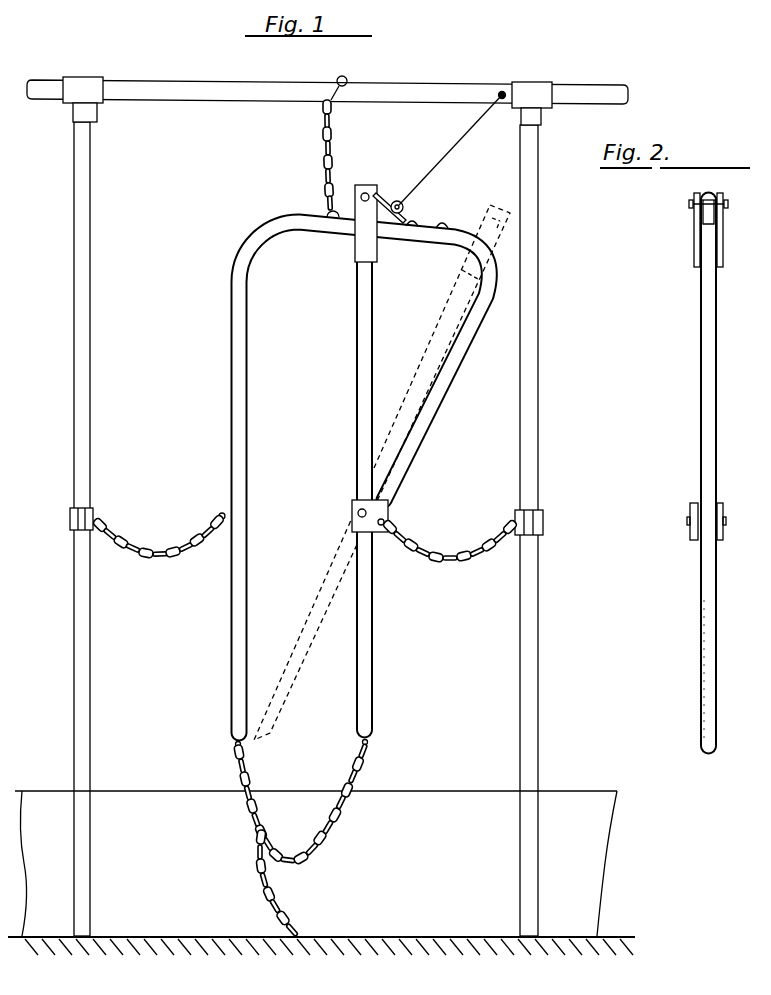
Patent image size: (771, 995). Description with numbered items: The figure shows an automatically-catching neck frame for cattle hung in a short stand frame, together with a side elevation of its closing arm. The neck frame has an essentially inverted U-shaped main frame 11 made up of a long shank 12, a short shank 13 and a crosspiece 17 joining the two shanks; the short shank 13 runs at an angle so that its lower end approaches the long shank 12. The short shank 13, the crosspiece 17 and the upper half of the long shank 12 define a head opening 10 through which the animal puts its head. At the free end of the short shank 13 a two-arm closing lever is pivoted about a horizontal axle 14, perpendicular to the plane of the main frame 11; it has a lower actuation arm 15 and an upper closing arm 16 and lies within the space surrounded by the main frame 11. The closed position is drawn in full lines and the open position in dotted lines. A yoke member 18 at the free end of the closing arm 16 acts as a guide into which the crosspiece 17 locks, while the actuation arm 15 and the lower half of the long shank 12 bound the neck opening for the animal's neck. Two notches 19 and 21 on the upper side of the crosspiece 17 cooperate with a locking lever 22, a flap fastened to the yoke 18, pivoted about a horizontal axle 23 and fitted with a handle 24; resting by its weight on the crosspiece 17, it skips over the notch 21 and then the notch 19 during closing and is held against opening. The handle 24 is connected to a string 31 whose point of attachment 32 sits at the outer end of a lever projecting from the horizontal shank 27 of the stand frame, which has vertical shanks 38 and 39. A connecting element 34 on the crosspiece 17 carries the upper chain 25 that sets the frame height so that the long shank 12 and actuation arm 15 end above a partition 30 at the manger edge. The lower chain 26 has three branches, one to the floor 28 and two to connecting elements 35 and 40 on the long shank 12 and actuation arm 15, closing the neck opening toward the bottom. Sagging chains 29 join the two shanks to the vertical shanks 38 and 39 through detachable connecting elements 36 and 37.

In FIG. 1, the head opening 10 is at (378, 444).
In FIG. 1, the main frame 11 is at (228, 322).
In FIG. 1, the long shank 12 is at (232, 358).
In FIG. 1, the short shank 13 is at (440, 396).
In FIG. 1, the horizontal axle 14 is at (356, 514).
In FIG. 2, the horizontal axle 14 is at (690, 522).
In FIG. 1, the actuation arm 15 is at (362, 651).
In FIG. 2, the actuation arm 15 is at (700, 660).
In FIG. 1, the closing arm 16 is at (418, 367).
In FIG. 2, the closing arm 16 is at (700, 367).
In FIG. 1, the crosspiece 17 is at (395, 238).
In FIG. 1, the yoke member 18 is at (358, 240).
In FIG. 2, the yoke member 18 is at (696, 240).
In FIG. 1, the notch 19 is at (415, 221).
In FIG. 1, the notch 21 is at (443, 231).
In FIG. 1, the locking lever 22 is at (398, 201).
In FIG. 2, the locking lever 22 is at (709, 219).
In FIG. 1, the horizontal axle 23 is at (366, 192).
In FIG. 2, the horizontal axle 23 is at (693, 204).
In FIG. 1, the handle 24 is at (405, 210).
In FIG. 1, the upper chain 25 is at (337, 135).
In FIG. 1, the lower chain 26 is at (252, 822).
In FIG. 1, the horizontal shank 27 is at (207, 95).
In FIG. 1, the floor 28 is at (190, 935).
In FIG. 1, the chains 29 is at (131, 530).
In FIG. 1, the partition 30 is at (446, 892).
In FIG. 1, the string 31 is at (466, 134).
In FIG. 1, the point of attachment 32 is at (501, 92).
In FIG. 1, the connecting element 34 is at (326, 211).
In FIG. 1, the connecting element 35 is at (234, 746).
In FIG. 1, the connecting element 36 is at (218, 513).
In FIG. 1, the connecting element 37 is at (382, 526).
In FIG. 1, the vertical shank 38 is at (92, 355).
In FIG. 1, the vertical shank 39 is at (540, 371).
In FIG. 1, the connecting element 40 is at (374, 749).